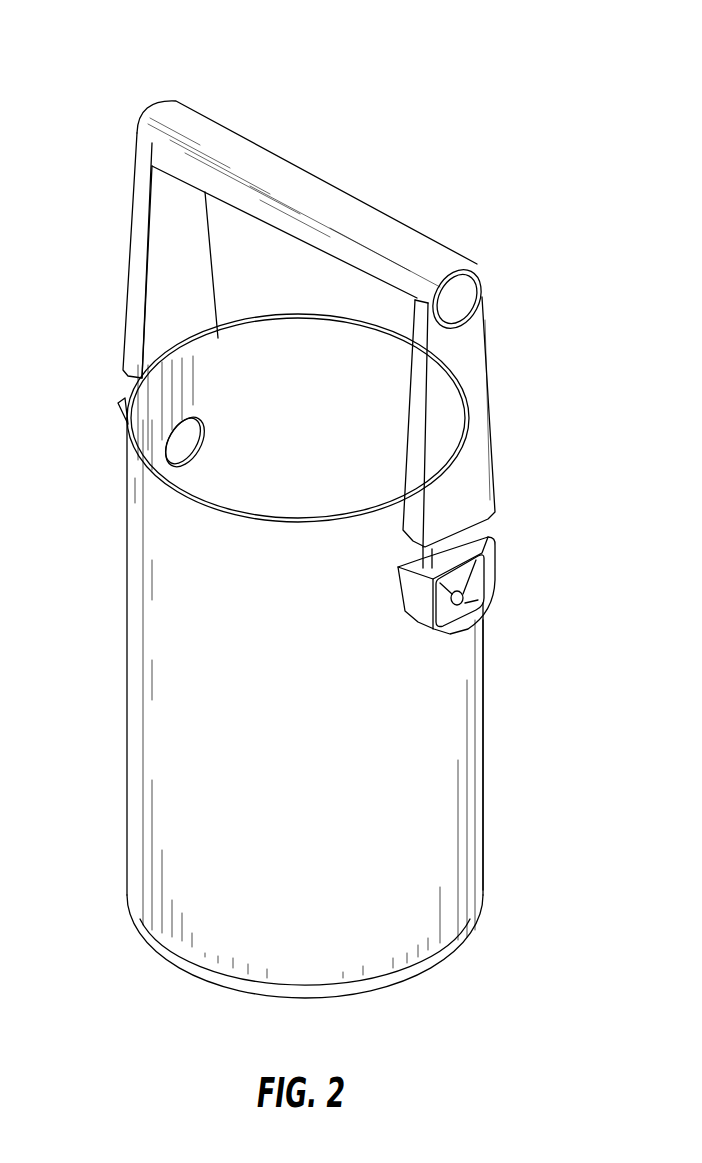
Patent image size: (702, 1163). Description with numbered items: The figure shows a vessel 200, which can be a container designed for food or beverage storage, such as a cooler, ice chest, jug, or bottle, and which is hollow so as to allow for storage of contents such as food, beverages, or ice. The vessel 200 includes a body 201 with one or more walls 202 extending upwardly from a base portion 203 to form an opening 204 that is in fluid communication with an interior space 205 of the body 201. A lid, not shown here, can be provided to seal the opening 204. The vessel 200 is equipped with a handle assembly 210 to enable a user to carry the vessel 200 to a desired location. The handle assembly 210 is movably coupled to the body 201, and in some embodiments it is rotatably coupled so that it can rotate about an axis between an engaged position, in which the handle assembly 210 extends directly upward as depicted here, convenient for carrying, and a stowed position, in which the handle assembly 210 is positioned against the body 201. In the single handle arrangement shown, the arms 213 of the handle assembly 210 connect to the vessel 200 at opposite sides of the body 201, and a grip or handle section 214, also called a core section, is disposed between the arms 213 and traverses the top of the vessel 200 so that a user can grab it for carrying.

The vessel 200 is at (150, 58).
The body 201 is at (327, 805).
The walls 202 is at (483, 822).
The base portion 203 is at (222, 990).
The opening 204 is at (268, 340).
The interior space 205 is at (327, 497).
The handle assembly 210 is at (304, 361).
The arms 213 is at (134, 248).
The grip or handle section 214 is at (250, 158).